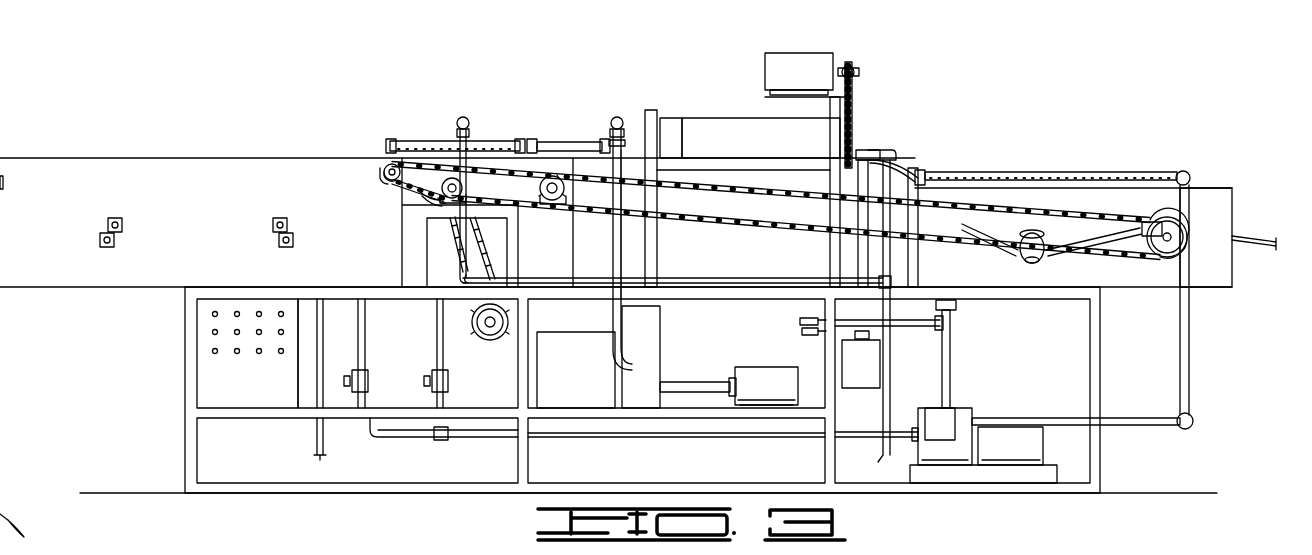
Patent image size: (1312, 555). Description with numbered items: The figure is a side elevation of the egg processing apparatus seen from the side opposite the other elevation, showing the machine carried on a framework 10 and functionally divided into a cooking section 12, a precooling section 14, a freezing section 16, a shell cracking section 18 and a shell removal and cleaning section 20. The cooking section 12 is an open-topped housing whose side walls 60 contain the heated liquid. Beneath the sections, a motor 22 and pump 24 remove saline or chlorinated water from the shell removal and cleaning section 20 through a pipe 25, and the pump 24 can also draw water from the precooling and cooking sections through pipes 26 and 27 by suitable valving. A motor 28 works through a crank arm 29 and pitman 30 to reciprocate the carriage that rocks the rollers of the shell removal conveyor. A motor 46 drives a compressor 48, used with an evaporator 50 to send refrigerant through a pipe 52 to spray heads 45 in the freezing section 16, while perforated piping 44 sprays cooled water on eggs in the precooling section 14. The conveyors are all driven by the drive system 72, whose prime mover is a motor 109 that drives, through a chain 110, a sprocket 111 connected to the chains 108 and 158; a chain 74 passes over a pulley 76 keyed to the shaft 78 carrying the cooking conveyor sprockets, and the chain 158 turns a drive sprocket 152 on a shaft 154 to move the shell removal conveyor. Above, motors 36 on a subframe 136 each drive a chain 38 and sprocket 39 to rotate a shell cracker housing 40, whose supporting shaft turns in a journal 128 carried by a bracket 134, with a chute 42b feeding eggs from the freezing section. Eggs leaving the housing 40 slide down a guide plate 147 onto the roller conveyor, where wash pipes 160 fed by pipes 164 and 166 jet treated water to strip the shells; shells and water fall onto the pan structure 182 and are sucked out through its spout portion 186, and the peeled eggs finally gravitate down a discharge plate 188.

The framework 10 is at (185, 358).
The cooking section 12 is at (119, 157).
The precooling section 14 is at (426, 135).
The freezing section 16 is at (564, 134).
The shell cracking section 18 is at (709, 117).
The shell removal and cleaning section 20 is at (960, 168).
The motor 22 is at (937, 313).
The pump 24 is at (958, 456).
The pipe 25 is at (950, 362).
The pipe 26 is at (448, 352).
The pipe 27 is at (364, 335).
The motor 28 is at (874, 370).
The crank arm 29 is at (818, 335).
The pitman 30 is at (815, 320).
The motor 36 is at (811, 77).
The chain 38 is at (853, 98).
The sprocket 39 is at (862, 148).
The shell cracker housing 40 is at (761, 144).
The post 42b is at (680, 118).
The perforated piping 44 is at (410, 141).
The spray heads 45 is at (548, 141).
The motor 46 is at (778, 393).
The compressor 48 is at (585, 363).
The evaporator 50 is at (655, 337).
The pipe 52 is at (613, 238).
The side walls 60 is at (204, 218).
The drive system 72 is at (713, 217).
The chain 74 is at (410, 195).
The pulley 76 is at (387, 176).
The shaft 78 is at (393, 166).
The chains 108 is at (520, 204).
The motor 109 is at (507, 345).
The chain 110 is at (458, 238).
The sprocket 111 is at (440, 202).
The journal 128 is at (892, 155).
The bracket 134 is at (644, 120).
The subframe 136 is at (832, 128).
The guide plate 147 is at (898, 172).
The drive sprocket 152 is at (1166, 252).
The shaft 154 is at (1170, 232).
The chain 158 is at (783, 220).
The wash pipes 160 is at (1050, 172).
The pipe 164 is at (1190, 333).
The pipe 166 is at (1138, 425).
The pan structure 182 is at (1078, 220).
The spout portion 186 is at (1020, 250).
The discharge plate 188 is at (1251, 233).